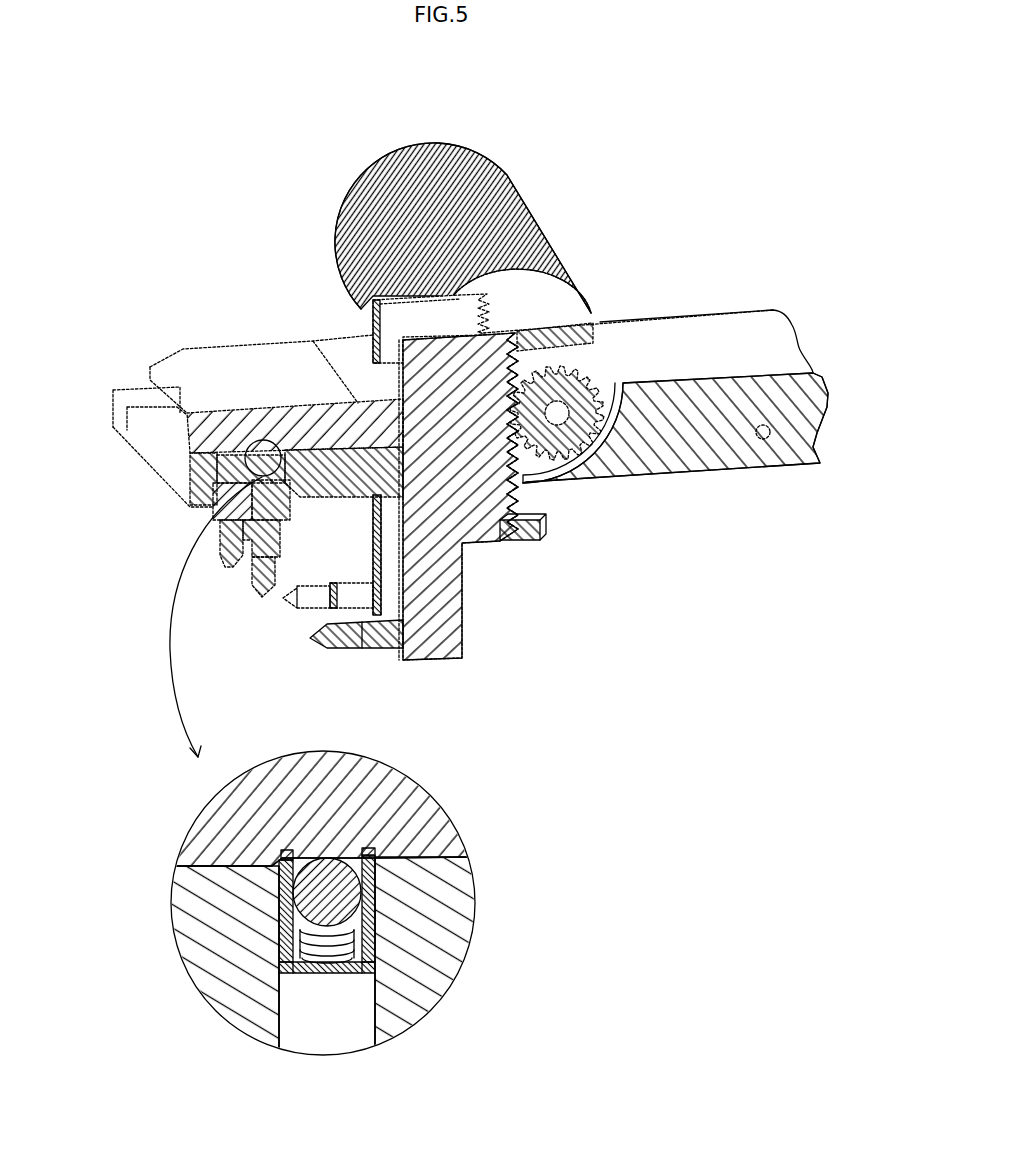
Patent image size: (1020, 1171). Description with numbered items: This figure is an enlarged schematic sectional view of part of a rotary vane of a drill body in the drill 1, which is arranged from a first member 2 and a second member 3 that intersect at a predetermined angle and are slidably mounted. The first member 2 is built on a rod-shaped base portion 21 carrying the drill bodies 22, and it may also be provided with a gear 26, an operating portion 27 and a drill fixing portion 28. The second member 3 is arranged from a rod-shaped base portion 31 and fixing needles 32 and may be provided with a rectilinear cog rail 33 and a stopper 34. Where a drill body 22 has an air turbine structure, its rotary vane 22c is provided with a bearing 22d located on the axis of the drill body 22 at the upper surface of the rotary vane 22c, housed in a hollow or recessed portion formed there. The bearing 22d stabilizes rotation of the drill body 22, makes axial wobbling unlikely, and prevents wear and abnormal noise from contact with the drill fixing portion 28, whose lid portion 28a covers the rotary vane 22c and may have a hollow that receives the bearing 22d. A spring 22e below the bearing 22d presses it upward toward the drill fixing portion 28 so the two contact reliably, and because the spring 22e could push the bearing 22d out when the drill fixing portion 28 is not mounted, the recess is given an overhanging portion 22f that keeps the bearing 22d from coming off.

The drill 1 is at (190, 133).
The first member 2 is at (144, 316).
The second member 3 is at (545, 661).
The rod-shaped base portion 21 is at (738, 347).
The drill body 22 is at (228, 558).
The rotary vane 22c is at (193, 963).
The bearing 22d is at (353, 900).
The spring 22e is at (293, 968).
The overhanging portion 22f is at (287, 857).
The gear 26 is at (585, 408).
The operating portion 27 is at (480, 200).
The drill fixing portion 28 is at (235, 367).
The lid portion 28a is at (367, 797).
The rod-shaped base portion 31 is at (372, 333).
The fixing needle 32 is at (290, 597).
The rectilinear cog rail 33 is at (512, 505).
The stopper 34 is at (538, 540).